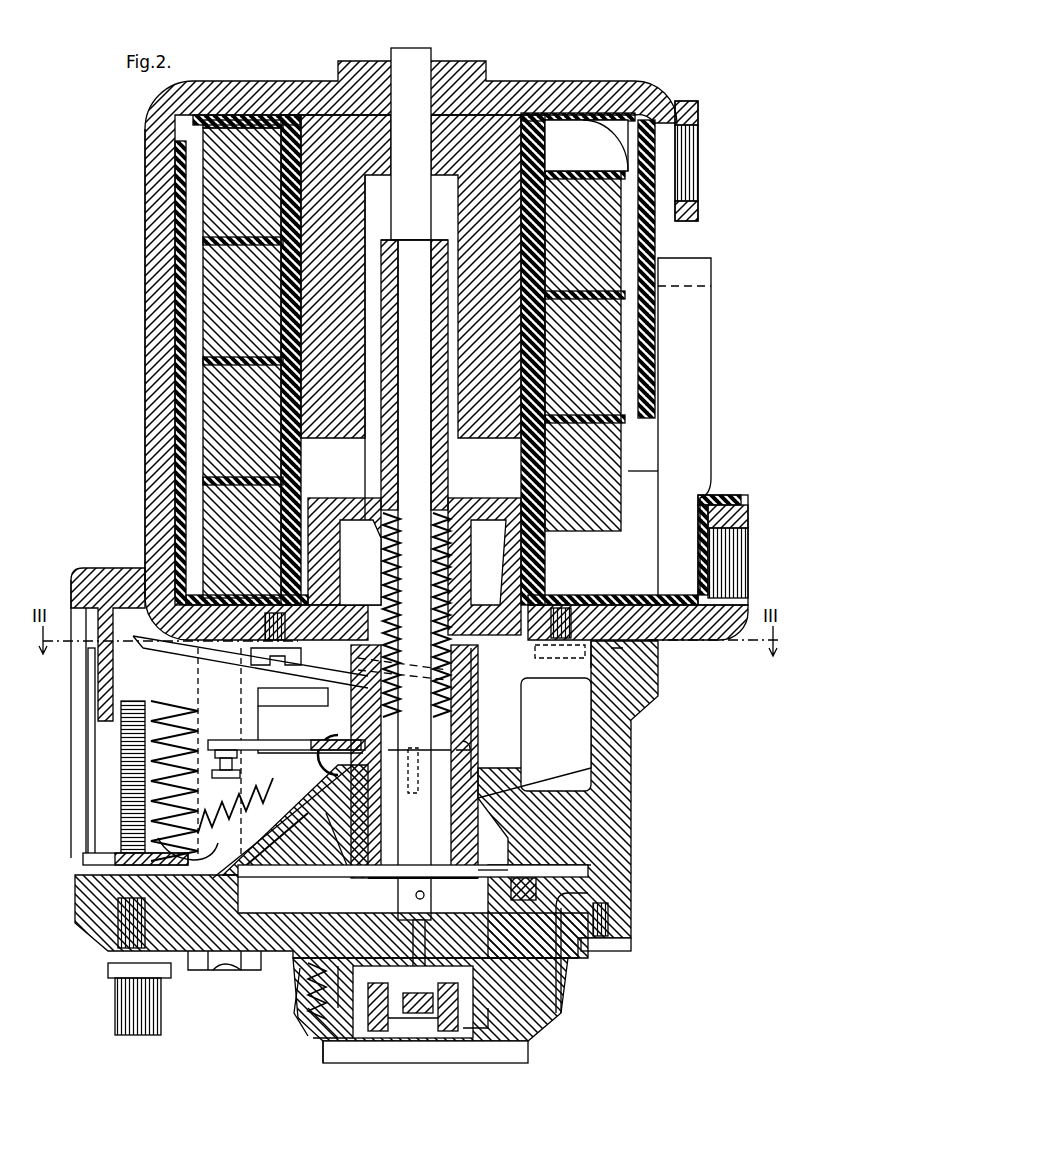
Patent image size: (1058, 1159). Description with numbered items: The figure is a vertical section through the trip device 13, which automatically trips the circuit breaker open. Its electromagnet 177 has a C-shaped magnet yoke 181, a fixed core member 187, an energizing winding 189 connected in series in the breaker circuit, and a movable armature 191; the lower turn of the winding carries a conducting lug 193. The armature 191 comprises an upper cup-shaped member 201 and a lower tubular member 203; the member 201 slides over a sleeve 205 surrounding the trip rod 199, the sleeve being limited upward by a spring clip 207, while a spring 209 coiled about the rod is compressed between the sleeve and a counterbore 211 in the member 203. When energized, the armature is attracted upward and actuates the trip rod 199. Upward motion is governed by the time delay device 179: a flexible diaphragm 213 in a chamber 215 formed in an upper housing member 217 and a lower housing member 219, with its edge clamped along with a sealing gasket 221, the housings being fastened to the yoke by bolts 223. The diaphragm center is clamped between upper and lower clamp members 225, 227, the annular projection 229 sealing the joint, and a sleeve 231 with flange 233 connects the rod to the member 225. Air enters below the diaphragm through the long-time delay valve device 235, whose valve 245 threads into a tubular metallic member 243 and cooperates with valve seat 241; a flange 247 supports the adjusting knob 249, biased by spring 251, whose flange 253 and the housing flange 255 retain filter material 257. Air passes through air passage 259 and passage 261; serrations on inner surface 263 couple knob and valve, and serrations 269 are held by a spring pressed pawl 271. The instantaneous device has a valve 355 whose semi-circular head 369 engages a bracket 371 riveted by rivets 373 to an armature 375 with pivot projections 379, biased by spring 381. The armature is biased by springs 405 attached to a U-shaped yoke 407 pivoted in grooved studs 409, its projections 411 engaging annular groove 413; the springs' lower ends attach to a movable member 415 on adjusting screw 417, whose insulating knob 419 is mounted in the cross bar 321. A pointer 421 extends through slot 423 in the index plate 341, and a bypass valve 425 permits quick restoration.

The trip device 13 is at (123, 113).
The electromagnet 177 is at (120, 287).
The time delay device 179 is at (694, 775).
The magnet yoke 181 is at (152, 190).
The fixed core member 187 is at (318, 125).
The energizing winding 189 is at (210, 285).
The movable armature 191 is at (350, 471).
The conducting lug 193 is at (695, 382).
The trip rod 199 is at (410, 62).
The upper cup-shaped member 201 is at (472, 490).
The lower tubular member 203 is at (462, 674).
The sleeve 205 is at (375, 441).
The spring clip 207 is at (386, 232).
The spring 209 is at (385, 576).
The counterbore 211 is at (446, 615).
The flexible diaphragm 213 is at (275, 875).
The chamber 215 is at (590, 815).
The upper housing member 217 is at (606, 726).
The lower housing member 219 is at (618, 883).
The sealing gasket 221 is at (618, 855).
The bolts 223 is at (217, 970).
The upper clamp member 225 is at (441, 855).
The lower clamp member 227 is at (285, 840).
The annular projection 229 is at (413, 864).
The sleeve 231 is at (496, 842).
The flange 233 is at (338, 840).
The long-time delay valve device 235 is at (456, 1101).
The valve seat 241 is at (408, 1035).
The tubular metallic member 243 is at (298, 985).
The valve 245 is at (440, 1033).
The flange 247 is at (385, 1033).
The adjusting knob 249 is at (316, 1045).
The spring 251 is at (366, 1025).
The flange 253 is at (302, 1018).
The flange 255 is at (262, 950).
The filter material 257 is at (310, 960).
The air passage 259 is at (310, 1035).
The passage 261 is at (422, 899).
The inner surface 263 is at (455, 1033).
The serrations 269 is at (290, 1005).
The spring pressed pawl 271 is at (555, 995).
The cross bar 321 is at (75, 925).
The index plate 341 is at (77, 682).
The valve 355 is at (318, 740).
The semi-circular head 369 is at (418, 656).
The bracket 371 is at (310, 729).
The rivets 373 is at (293, 696).
The armature 375 is at (290, 662).
The pivot projections 379 is at (612, 655).
The spring 381 is at (152, 690).
The springs 405 is at (235, 798).
The U-shaped yoke 407 is at (350, 730).
The grooved studs 409 is at (210, 742).
The projections 411 is at (419, 770).
The annular groove 413 is at (462, 733).
The movable member 415 is at (178, 845).
The adjusting screw 417 is at (113, 790).
The insulating knob 419 is at (110, 990).
The pointer 421 is at (80, 855).
The slot 423 is at (80, 758).
The bypass valve 425 is at (520, 868).